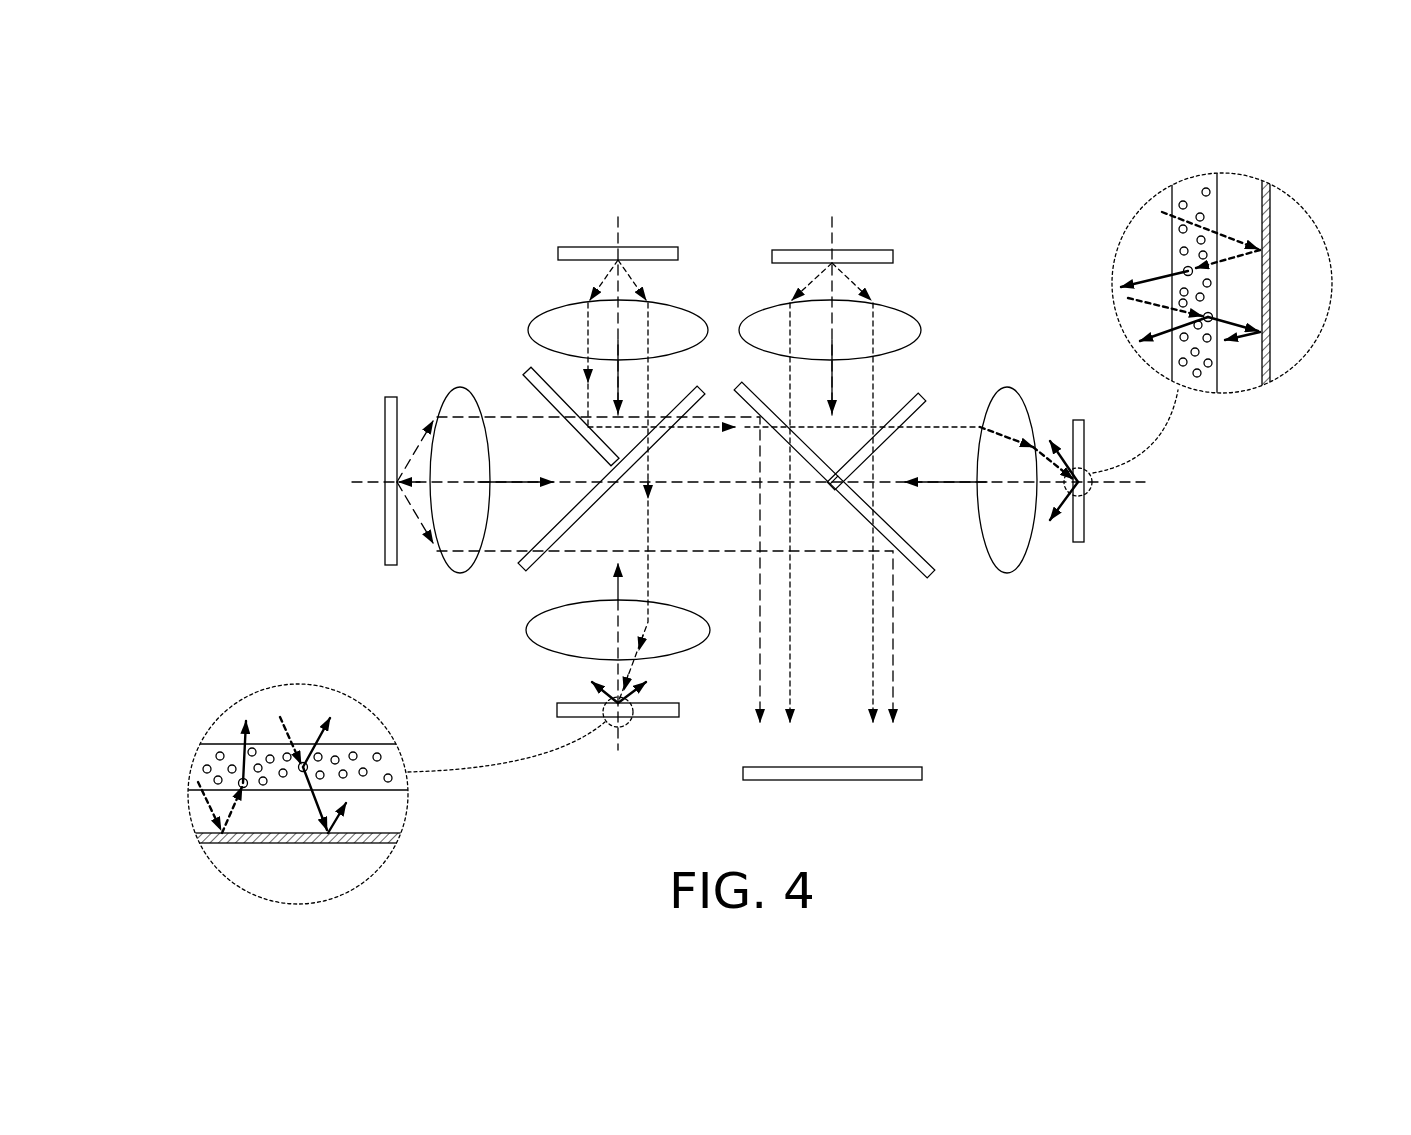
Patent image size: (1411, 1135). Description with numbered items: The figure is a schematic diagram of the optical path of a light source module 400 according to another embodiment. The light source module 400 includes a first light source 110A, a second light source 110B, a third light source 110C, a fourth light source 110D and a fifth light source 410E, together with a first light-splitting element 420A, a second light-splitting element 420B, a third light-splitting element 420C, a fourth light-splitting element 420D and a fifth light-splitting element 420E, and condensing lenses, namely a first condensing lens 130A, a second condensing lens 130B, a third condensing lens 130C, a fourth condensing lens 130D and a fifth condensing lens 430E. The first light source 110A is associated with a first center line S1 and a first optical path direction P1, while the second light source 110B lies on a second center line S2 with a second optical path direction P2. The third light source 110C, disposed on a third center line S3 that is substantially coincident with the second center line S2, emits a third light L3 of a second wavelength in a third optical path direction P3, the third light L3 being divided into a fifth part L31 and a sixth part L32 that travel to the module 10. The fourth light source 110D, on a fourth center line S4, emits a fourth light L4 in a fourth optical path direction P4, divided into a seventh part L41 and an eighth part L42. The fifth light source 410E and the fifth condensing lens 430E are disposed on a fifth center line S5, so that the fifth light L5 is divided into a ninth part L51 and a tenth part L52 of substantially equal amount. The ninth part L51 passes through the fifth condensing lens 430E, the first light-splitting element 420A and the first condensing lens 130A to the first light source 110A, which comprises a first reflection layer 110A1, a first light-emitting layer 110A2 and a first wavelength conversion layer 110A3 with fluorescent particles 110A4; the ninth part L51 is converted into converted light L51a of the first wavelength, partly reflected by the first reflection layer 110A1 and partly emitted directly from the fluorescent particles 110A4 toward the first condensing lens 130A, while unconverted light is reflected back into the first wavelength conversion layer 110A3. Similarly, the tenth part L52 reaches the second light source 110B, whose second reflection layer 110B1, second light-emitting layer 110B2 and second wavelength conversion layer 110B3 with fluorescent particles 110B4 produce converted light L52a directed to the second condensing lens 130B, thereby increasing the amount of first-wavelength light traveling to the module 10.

The light source module 400 is at (426, 138).
The module 10 is at (922, 773).
The first light source 110A is at (507, 890).
The first reflection layer 110A1 is at (298, 838).
The first light-emitting layer 110A2 is at (387, 812).
The first wavelength conversion layer 110A3 is at (298, 767).
The fluorescent particles 110A4 is at (297, 768).
The second light source 110B is at (1085, 530).
The second reflection layer 110B1 is at (1266, 285).
The second light-emitting layer 110B2 is at (1237, 375).
The second wavelength conversion layer 110B3 is at (1194, 284).
The fluorescent particles 110B4 is at (1196, 282).
The third light source 110C is at (392, 568).
The fourth light source 110D is at (893, 256).
The fifth light source 410E is at (678, 253).
The fifth condensing lens 430E is at (530, 322).
The first condensing lens 130A is at (528, 632).
The second condensing lens 130B is at (1012, 392).
The third condensing lens 130C is at (440, 388).
The fourth condensing lens 130D is at (830, 330).
The first light-splitting element 420A is at (517, 567).
The second light-splitting element 420B is at (925, 395).
The third light-splitting element 420C is at (735, 385).
The fourth light-splitting element 420D is at (933, 577).
The fifth light-splitting element 420E is at (522, 372).
The third light L3 is at (249, 422).
The fifth part L31 is at (415, 508).
The sixth part L32 is at (415, 450).
The fourth light L4 is at (906, 161).
The seventh part L41 is at (815, 288).
The eighth part L42 is at (855, 288).
The fifth light L5 is at (687, 153).
The ninth part L51 is at (640, 285).
The converted light L51a is at (640, 695).
The tenth part L52 is at (598, 288).
The converted light L52a is at (1065, 462).
The first center line S1 is at (520, 734).
The second center line S2 is at (1121, 443).
The third center line S3 is at (370, 482).
The fourth center line S4 is at (832, 210).
The fifth center line S5 is at (618, 205).
The first optical path direction P1 is at (600, 582).
The second optical path direction P2 is at (946, 465).
The third optical path direction P3 is at (515, 465).
The fourth optical path direction P4 is at (742, 376).